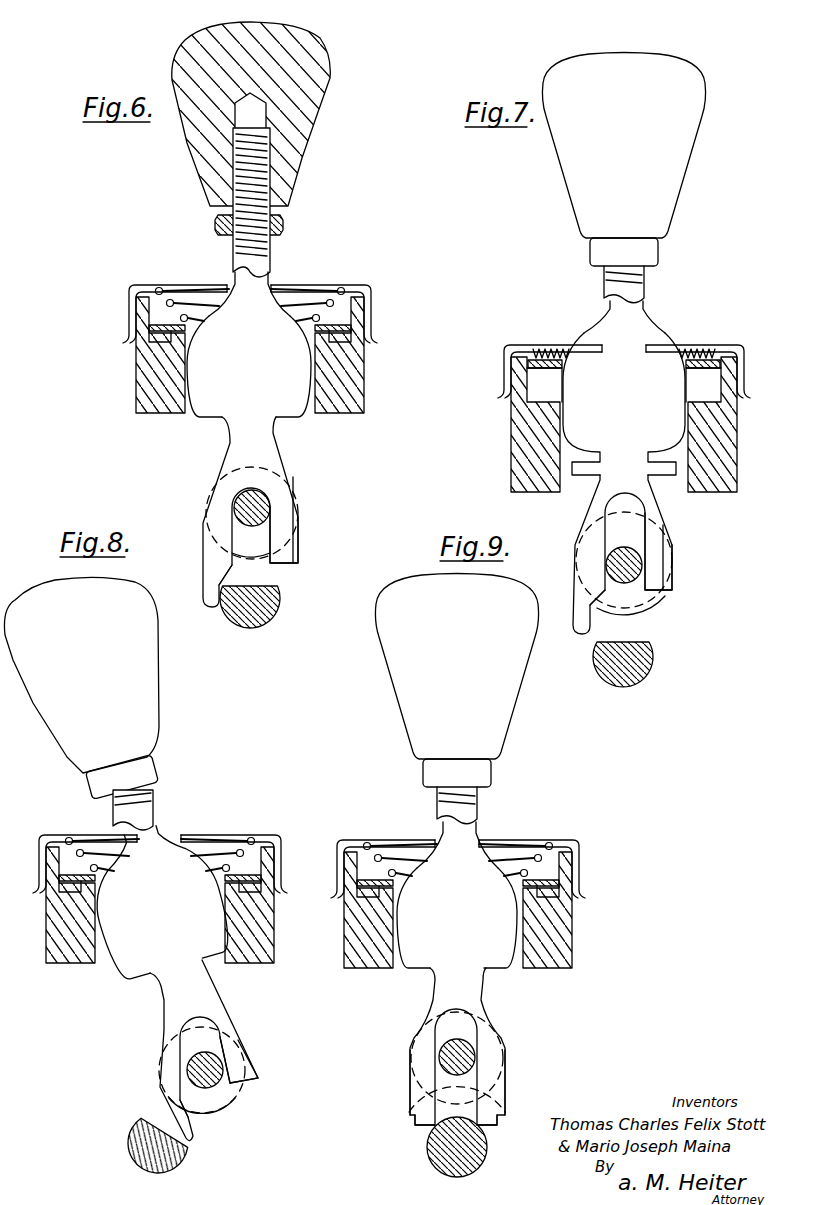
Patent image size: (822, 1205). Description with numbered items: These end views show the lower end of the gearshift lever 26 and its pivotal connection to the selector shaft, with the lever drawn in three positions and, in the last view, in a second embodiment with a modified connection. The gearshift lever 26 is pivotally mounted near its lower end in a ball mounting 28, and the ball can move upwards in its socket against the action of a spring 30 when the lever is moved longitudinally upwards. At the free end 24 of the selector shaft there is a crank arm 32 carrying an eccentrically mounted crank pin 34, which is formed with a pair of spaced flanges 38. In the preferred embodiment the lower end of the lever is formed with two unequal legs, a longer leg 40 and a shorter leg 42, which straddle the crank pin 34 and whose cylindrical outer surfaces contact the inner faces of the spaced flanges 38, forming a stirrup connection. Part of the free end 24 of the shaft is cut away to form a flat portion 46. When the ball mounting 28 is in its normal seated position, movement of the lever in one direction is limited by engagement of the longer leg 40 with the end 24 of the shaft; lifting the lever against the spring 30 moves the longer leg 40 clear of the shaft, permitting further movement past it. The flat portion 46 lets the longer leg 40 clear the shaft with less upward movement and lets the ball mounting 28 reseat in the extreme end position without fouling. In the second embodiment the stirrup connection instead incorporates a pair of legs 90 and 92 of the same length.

In FIG. 6, the free end of the selector shaft 24 is at (268, 612).
In FIG. 7, the free end of the selector shaft 24 is at (645, 660).
In FIG. 8, the free end of the selector shaft 24 is at (146, 1150).
In FIG. 9, the free end of the selector shaft 24 is at (470, 1150).
In FIG. 6, the gearshift lever 26 is at (262, 255).
In FIG. 7, the gearshift lever 26 is at (615, 287).
In FIG. 8, the gearshift lever 26 is at (155, 803).
In FIG. 9, the gearshift lever 26 is at (480, 813).
In FIG. 6, the ball mounting 28 is at (208, 357).
In FIG. 7, the ball mounting 28 is at (585, 418).
In FIG. 8, the ball mounting 28 is at (108, 912).
In FIG. 9, the ball mounting 28 is at (410, 912).
In FIG. 6, the spring 30 is at (190, 296).
In FIG. 7, the spring 30 is at (556, 350).
In FIG. 8, the spring 30 is at (90, 843).
In FIG. 9, the spring 30 is at (394, 847).
In FIG. 9, the crank arm 32 is at (430, 1120).
In FIG. 6, the crank pin 34 is at (237, 505).
In FIG. 7, the crank pin 34 is at (631, 556).
In FIG. 8, the crank pin 34 is at (216, 1068).
In FIG. 9, the crank pin 34 is at (466, 1049).
In FIG. 9, the spaced flanges 38 is at (481, 1015).
In FIG. 6, the longer leg 40 is at (205, 588).
In FIG. 7, the longer leg 40 is at (581, 616).
In FIG. 8, the longer leg 40 is at (188, 1133).
In FIG. 6, the shorter leg 42 is at (298, 549).
In FIG. 7, the shorter leg 42 is at (660, 579).
In FIG. 8, the shorter leg 42 is at (242, 1085).
In FIG. 6, the flat portion 46 is at (255, 585).
In FIG. 7, the flat portion 46 is at (632, 643).
In FIG. 8, the flat portion 46 is at (178, 1146).
In FIG. 9, the leg 90 is at (420, 1105).
In FIG. 9, the leg 92 is at (500, 1104).